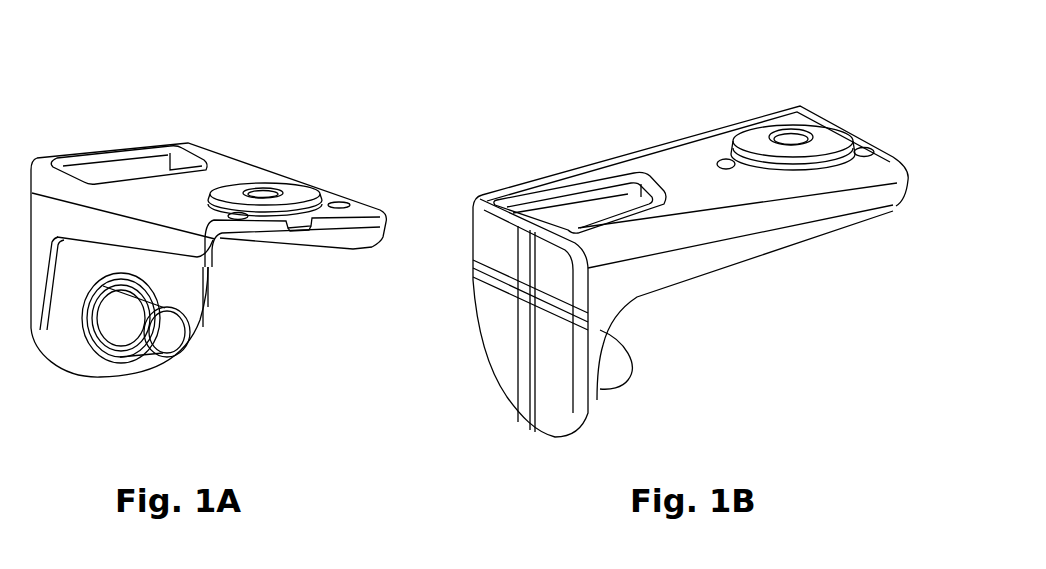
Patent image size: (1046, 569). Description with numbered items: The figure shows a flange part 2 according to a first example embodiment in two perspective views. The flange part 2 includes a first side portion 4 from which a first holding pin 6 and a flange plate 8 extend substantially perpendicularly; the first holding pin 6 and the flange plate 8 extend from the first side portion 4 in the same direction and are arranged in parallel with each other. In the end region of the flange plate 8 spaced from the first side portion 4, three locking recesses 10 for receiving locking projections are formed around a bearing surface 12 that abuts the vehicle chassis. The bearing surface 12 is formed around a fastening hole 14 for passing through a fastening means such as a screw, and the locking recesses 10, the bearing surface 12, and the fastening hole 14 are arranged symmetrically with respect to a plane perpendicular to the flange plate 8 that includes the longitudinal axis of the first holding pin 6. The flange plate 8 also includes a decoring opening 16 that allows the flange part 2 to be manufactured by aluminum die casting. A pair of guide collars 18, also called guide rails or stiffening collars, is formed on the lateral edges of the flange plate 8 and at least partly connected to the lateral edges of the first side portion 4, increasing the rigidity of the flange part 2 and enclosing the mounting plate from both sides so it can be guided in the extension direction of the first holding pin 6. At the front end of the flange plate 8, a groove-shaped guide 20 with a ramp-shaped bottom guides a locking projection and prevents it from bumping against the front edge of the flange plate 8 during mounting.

In FIG. 1A, the flange part 2 is at (320, 167).
In FIG. 1A, the first side portion 4 is at (67, 330).
In FIG. 1B, the first side portion 4 is at (489, 307).
In FIG. 1A, the first holding pin 6 is at (162, 337).
In FIG. 1B, the first holding pin 6 is at (617, 363).
In FIG. 1A, the flange plate 8 is at (240, 173).
In FIG. 1B, the flange plate 8 is at (670, 167).
In FIG. 1A, the locking recesses 10 is at (240, 223).
In FIG. 1B, the locking recesses 10 is at (722, 155).
In FIG. 1A, the bearing surface 12 is at (288, 186).
In FIG. 1B, the bearing surface 12 is at (817, 143).
In FIG. 1B, the fastening hole 14 is at (785, 140).
In FIG. 1A, the decoring opening 16 is at (152, 157).
In FIG. 1B, the decoring opening 16 is at (583, 210).
In FIG. 1A, the guide collars 18 is at (217, 247).
In FIG. 1B, the guide collars 18 is at (857, 210).
In FIG. 1A, the guide 20 is at (297, 231).